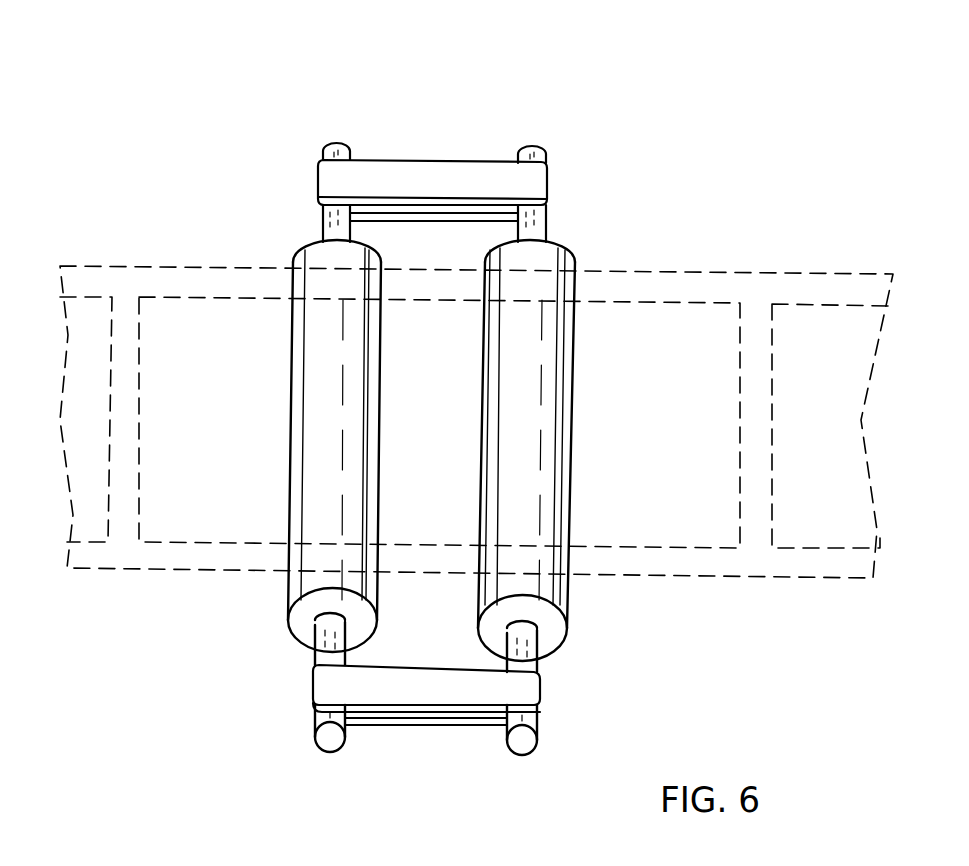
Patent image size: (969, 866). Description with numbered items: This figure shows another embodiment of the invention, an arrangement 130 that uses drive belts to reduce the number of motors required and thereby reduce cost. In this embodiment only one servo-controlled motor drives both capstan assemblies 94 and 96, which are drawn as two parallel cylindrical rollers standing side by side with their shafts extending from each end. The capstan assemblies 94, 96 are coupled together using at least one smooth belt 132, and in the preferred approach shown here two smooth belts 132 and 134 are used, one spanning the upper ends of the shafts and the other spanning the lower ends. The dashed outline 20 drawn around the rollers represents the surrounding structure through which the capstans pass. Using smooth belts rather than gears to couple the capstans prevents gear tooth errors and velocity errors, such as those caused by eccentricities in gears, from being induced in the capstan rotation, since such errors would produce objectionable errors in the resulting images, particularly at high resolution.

The web / substrate (dashed outline) 20 is at (232, 572).
The roller assembly 130 is at (316, 78).
The smooth belt 132 is at (445, 167).
The smooth belt 134 is at (437, 712).
The capstan assembly 94 is at (312, 730).
The capstan assembly 96 is at (533, 732).